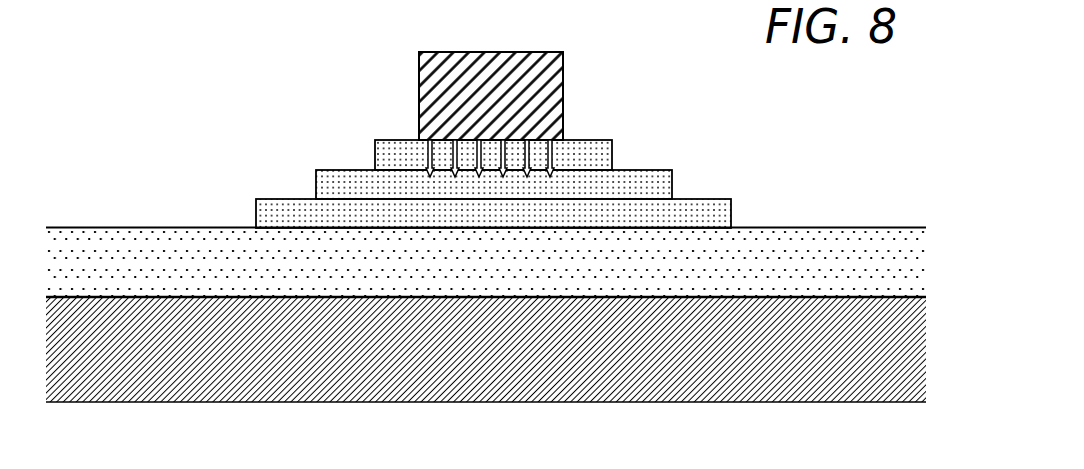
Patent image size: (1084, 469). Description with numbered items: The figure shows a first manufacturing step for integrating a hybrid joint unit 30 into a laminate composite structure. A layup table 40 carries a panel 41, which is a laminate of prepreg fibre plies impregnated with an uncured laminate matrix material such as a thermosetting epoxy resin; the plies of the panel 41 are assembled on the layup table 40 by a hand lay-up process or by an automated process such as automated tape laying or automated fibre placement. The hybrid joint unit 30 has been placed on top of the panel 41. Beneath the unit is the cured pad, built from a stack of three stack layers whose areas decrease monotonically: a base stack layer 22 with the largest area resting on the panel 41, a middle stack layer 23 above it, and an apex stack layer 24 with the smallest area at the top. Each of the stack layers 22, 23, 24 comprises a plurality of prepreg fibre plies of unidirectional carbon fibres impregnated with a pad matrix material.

The hybrid joint unit 30 is at (357, 87).
The apex stack layer 24 is at (585, 153).
The stack layer 23 is at (638, 187).
The base stack layer 22 is at (687, 213).
The panel 41 is at (800, 237).
The layup table 40 is at (728, 385).